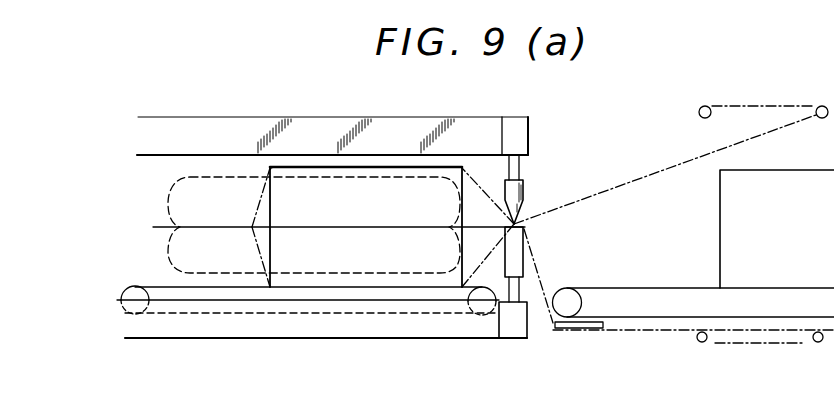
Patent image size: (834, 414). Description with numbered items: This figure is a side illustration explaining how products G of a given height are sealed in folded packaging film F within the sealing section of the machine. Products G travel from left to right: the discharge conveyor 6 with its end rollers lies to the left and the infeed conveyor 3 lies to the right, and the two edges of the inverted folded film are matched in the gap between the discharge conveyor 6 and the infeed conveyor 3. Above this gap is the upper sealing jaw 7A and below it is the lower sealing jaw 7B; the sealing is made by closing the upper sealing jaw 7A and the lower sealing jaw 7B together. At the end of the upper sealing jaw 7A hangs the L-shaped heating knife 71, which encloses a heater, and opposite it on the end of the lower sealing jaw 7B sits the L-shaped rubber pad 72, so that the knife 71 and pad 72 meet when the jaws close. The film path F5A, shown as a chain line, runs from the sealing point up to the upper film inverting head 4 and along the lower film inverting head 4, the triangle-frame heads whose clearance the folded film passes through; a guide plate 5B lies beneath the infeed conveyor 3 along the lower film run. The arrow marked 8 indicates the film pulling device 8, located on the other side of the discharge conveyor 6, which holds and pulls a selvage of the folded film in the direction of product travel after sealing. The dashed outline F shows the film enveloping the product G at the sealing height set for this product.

The infeed conveyor 3 is at (648, 287).
The film inverting head 4 is at (712, 106).
The guide plate 5B is at (668, 331).
The discharge conveyor 6 is at (167, 287).
The upper sealing jaw 7A is at (529, 140).
The lower sealing jaw 7B is at (527, 331).
The film pulling device 8 is at (238, 166).
The L-shaped heating knife 71 is at (524, 194).
The L-shaped rubber pad 72 is at (524, 260).
The film F is at (166, 227).
The film F5A is at (644, 178).
The product G is at (358, 258).